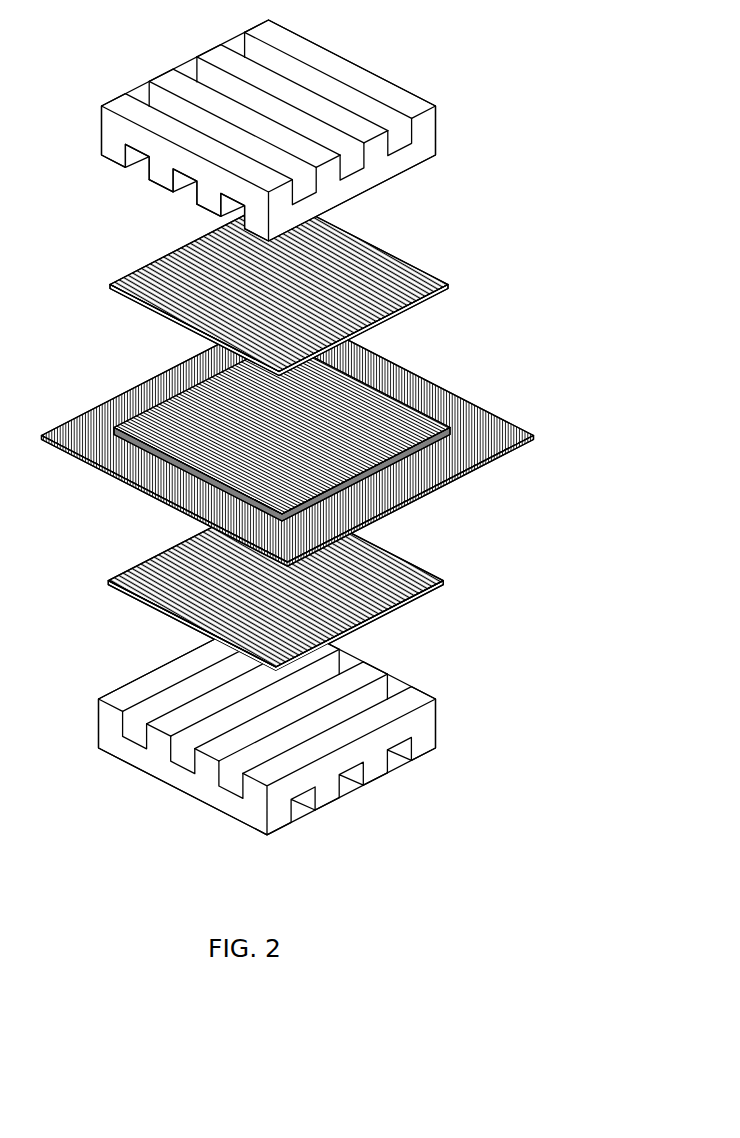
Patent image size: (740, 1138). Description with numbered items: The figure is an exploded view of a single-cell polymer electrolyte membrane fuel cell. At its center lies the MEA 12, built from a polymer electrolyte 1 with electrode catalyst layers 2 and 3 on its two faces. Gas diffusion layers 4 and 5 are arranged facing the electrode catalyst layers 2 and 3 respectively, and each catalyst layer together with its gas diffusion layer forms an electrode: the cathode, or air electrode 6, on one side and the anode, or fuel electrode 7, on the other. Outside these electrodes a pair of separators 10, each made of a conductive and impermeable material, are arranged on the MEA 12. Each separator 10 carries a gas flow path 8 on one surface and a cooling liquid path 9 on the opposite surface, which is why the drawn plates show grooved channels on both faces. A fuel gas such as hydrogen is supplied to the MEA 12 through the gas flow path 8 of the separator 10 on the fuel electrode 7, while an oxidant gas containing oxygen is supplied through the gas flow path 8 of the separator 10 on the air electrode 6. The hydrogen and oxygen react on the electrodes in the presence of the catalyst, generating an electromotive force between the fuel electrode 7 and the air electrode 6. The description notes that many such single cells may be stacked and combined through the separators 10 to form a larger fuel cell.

The polymer electrolyte 1 is at (497, 445).
The electrode catalyst layer 2 is at (187, 417).
The electrode catalyst layer 3 is at (343, 500).
The gas diffusion layer 4 is at (447, 285).
The gas diffusion layer 5 is at (387, 585).
The cathode (air electrode) 6 is at (381, 287).
The anode (fuel electrode) 7 is at (374, 569).
The gas flow path 8 is at (140, 170).
The cooling liquid path 9 is at (190, 60).
The separator 10 is at (307, 444).
The MEA 12 is at (337, 437).